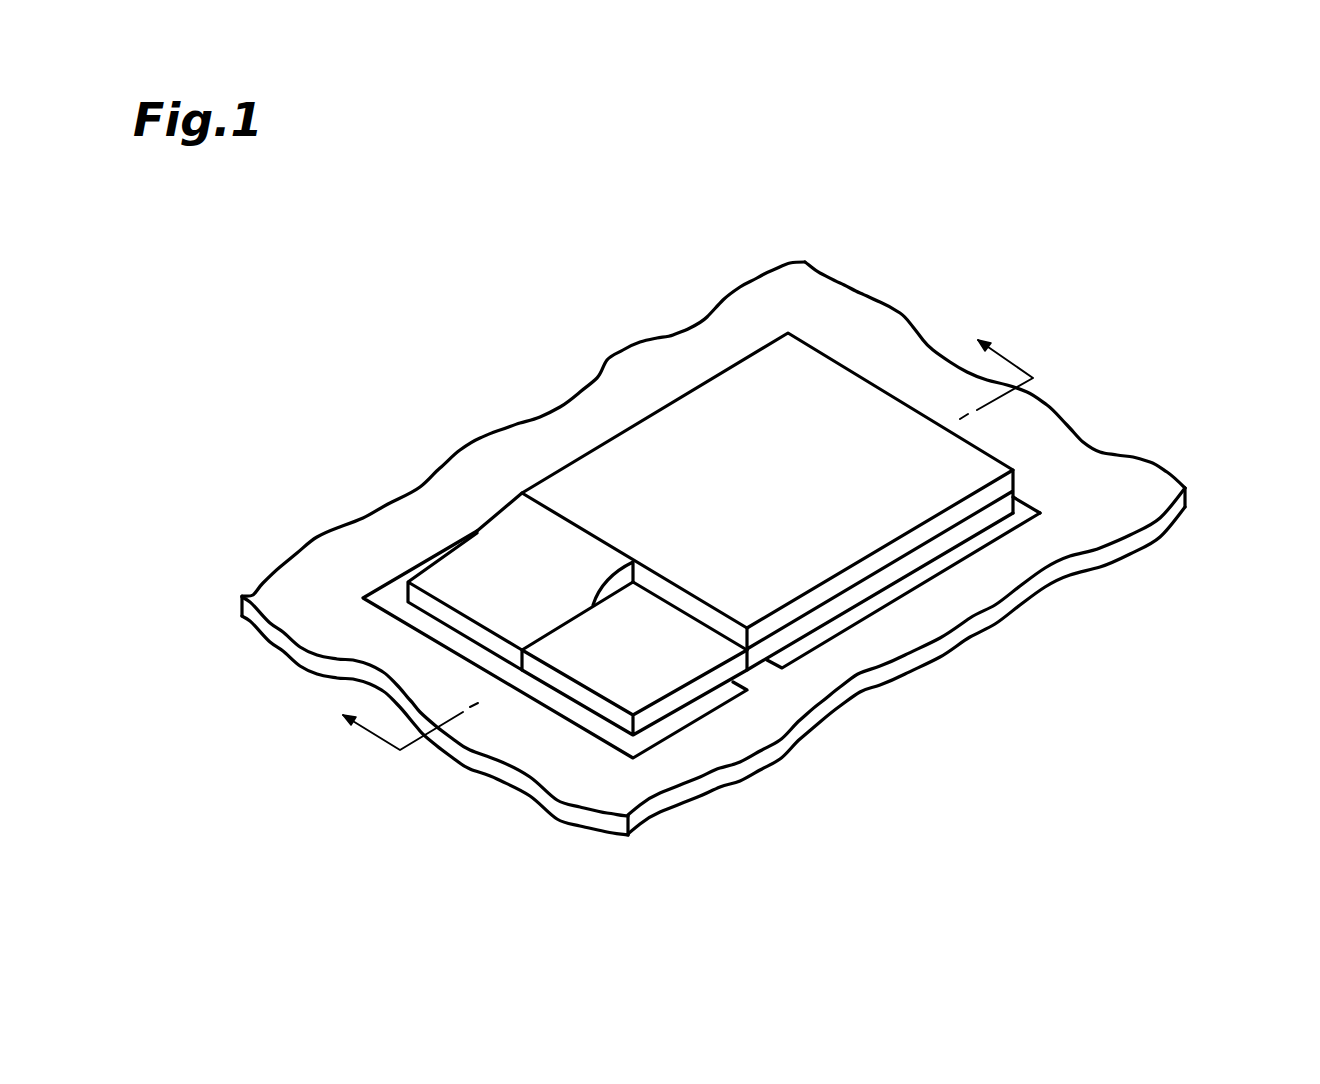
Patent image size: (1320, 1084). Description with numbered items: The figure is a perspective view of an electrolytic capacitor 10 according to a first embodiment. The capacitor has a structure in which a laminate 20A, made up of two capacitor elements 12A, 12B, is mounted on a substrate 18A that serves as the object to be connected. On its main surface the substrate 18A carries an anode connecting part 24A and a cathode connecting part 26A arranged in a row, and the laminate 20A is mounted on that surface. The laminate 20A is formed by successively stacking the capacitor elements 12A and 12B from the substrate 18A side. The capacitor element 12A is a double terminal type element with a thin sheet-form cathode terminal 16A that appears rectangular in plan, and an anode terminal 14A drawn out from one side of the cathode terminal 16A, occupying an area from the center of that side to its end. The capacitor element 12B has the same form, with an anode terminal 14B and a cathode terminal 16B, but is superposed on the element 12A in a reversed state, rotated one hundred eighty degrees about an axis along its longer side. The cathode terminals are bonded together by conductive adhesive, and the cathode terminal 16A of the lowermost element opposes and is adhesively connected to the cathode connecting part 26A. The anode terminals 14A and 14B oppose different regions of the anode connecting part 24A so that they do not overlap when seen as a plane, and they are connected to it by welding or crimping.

The electrolytic capacitor 10 is at (908, 263).
The capacitor element 12A is at (1035, 484).
The capacitor element 12B is at (1012, 446).
The anode terminal 14A is at (690, 693).
The anode terminal 14B is at (468, 571).
The cathode terminal 16A is at (850, 597).
The cathode terminal 16B is at (678, 427).
The substrate 18A is at (1155, 490).
The laminate 20A is at (1226, 384).
The anode connecting part 24A is at (643, 740).
The cathode connecting part 26A is at (963, 550).